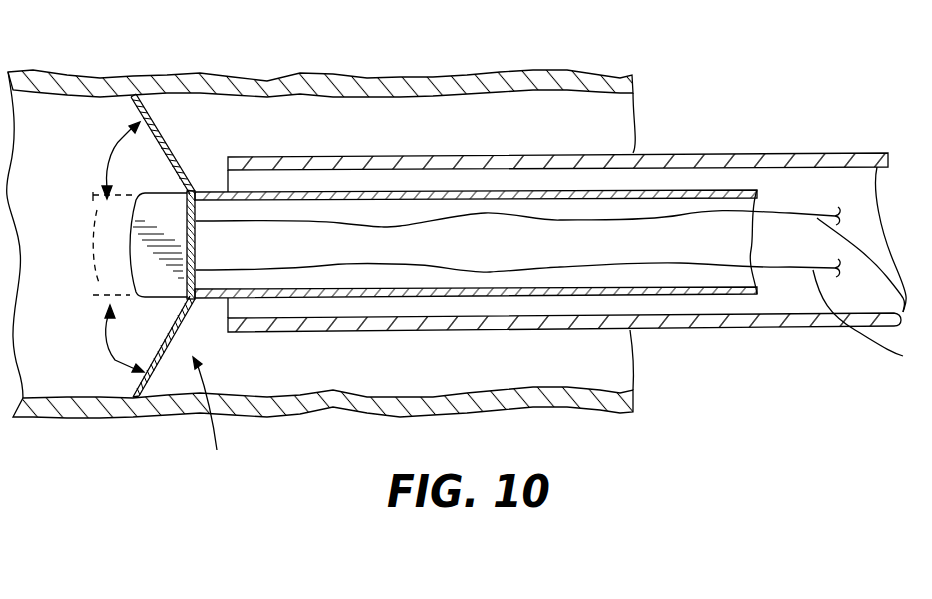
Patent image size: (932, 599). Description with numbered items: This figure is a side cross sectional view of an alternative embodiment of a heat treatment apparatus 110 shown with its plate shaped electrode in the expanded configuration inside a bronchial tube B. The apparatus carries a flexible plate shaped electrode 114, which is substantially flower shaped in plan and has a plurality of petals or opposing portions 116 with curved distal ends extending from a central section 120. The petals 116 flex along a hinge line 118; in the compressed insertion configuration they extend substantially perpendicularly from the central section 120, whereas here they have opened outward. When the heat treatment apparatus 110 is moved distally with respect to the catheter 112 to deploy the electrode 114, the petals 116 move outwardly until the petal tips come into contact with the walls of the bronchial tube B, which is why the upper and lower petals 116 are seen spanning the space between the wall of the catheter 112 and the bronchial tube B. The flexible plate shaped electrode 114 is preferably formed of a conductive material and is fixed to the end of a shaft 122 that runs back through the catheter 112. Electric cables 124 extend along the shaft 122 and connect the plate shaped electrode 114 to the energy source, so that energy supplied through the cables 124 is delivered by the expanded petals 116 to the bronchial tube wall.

The bronchial tube B is at (594, 77).
The heat treatment apparatus 110 is at (650, 178).
The catheter 112 is at (797, 325).
The flexible plate shaped electrode 114 is at (215, 418).
The petals 116 is at (154, 125).
The hinge line 118 is at (195, 192).
The central section 120 is at (190, 287).
The shaft 122 is at (673, 293).
The electric cables 124 is at (903, 312).